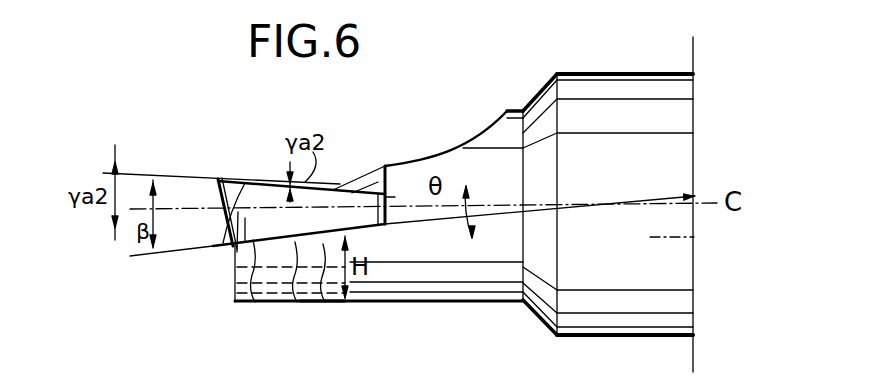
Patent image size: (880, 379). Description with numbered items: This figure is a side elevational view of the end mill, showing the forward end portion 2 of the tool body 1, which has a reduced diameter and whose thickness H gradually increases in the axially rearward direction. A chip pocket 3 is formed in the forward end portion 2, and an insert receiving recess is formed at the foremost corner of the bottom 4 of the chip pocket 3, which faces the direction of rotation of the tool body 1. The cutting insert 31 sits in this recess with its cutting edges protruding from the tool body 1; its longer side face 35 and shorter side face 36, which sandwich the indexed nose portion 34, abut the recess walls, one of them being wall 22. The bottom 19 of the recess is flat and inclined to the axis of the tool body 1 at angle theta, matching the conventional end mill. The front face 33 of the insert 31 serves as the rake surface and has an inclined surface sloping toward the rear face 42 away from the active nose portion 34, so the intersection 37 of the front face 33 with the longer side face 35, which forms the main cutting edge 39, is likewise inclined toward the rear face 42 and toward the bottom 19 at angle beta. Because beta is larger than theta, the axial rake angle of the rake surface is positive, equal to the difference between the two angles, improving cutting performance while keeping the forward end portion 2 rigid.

The tool body 1 is at (627, 86).
The forward end portion 2 is at (465, 322).
The chip pocket 3 is at (485, 116).
The bottom of the chip pocket 4 is at (463, 148).
The bottom of the insert receiving recess 19 is at (296, 303).
The wall of the insert receiving recess 22 is at (379, 182).
The cutting insert 31 is at (282, 153).
The front face 33 is at (329, 185).
The nose portion 34 is at (217, 179).
The longer side face 35 is at (254, 303).
The shorter side face 36 is at (391, 197).
The intersection 37 is at (233, 247).
The main cutting edge 39 is at (243, 210).
The rear face 42 is at (336, 303).